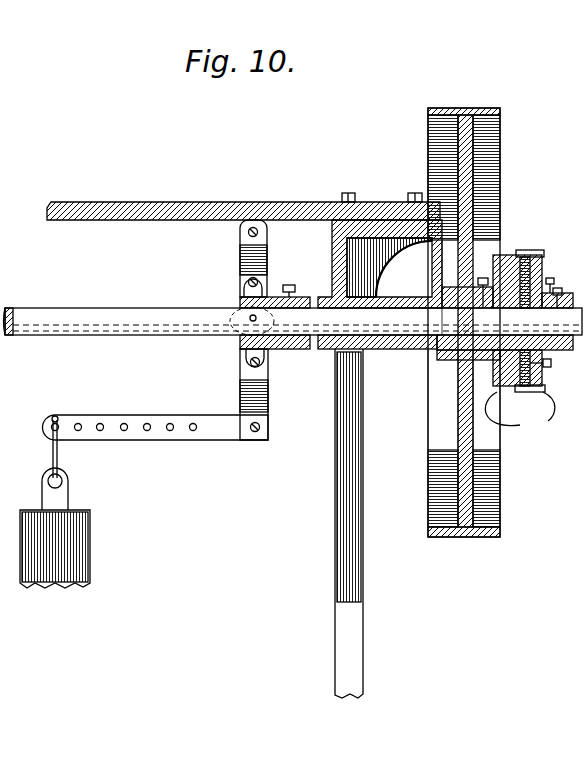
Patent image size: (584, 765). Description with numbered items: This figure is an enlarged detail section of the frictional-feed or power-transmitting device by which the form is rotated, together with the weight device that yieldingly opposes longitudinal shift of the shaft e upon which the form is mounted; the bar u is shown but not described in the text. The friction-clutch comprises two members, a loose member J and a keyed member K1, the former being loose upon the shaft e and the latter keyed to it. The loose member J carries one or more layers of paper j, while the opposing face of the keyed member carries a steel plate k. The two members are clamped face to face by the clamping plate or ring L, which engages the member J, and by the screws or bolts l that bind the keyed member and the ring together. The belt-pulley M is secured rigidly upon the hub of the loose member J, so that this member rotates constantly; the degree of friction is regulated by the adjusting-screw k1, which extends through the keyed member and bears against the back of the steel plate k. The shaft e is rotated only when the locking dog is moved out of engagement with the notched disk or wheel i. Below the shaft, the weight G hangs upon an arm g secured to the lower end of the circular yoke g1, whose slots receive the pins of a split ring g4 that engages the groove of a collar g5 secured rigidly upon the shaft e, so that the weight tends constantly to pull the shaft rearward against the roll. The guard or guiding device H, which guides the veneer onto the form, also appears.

The supporting bar u is at (213, 214).
The belt-pulley M is at (475, 107).
The loose member of friction-clutch J is at (505, 257).
The layers of paper j is at (520, 257).
The keyed member of friction-clutch K1 is at (536, 254).
The adjusting-screw k1 is at (552, 282).
The notched disk or wheel i is at (542, 352).
The steel plate k is at (549, 368).
The screws or bolts l is at (548, 411).
The clamping plate or ring L is at (502, 423).
The shaft e is at (118, 320).
The split ring g4 is at (221, 258).
The circular yoke g1 is at (250, 384).
The collar g5 is at (272, 340).
The arm g is at (206, 432).
The weight G is at (58, 553).
The guard or guiding device H is at (348, 535).